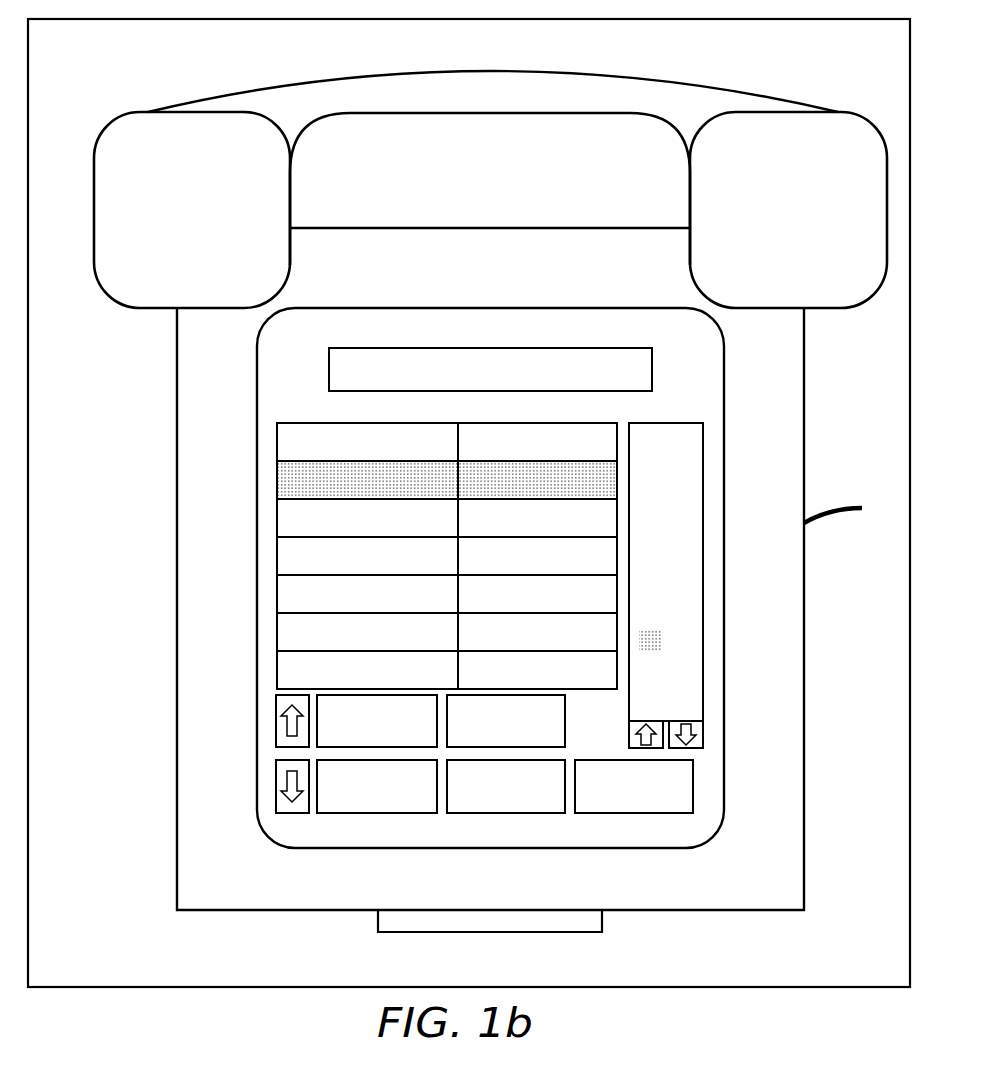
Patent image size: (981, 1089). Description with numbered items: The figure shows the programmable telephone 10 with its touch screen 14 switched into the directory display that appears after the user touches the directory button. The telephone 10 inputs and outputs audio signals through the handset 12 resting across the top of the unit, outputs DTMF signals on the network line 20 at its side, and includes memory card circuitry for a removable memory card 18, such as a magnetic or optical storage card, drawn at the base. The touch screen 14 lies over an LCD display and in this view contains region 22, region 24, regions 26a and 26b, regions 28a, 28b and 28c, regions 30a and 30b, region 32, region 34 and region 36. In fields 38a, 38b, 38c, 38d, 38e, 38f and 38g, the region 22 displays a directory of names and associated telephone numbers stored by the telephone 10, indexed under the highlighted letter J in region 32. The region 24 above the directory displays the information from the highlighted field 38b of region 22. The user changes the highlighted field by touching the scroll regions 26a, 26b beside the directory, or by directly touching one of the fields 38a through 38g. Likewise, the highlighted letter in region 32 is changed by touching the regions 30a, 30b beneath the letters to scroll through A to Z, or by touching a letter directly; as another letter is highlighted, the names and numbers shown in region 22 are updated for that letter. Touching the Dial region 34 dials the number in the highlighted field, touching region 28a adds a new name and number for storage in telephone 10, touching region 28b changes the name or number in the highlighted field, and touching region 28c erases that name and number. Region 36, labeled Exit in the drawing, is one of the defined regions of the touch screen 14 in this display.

The programmable telephone 10 is at (134, 645).
The handset 12 is at (709, 98).
The touch screen 14 is at (631, 849).
The removable memory card 18 is at (582, 932).
The network line 20 is at (832, 516).
The directory region 22 is at (410, 534).
The information display region 24 is at (653, 368).
The scroll region 26a is at (276, 738).
The scroll region 26b is at (276, 802).
The add name region 28a is at (372, 814).
The change name region 28b is at (502, 814).
The erase name region 28c is at (607, 814).
The letter scroll region 30a is at (630, 733).
The letter scroll region 30b is at (704, 735).
The letter index region 32 is at (667, 423).
The dial region 34 is at (340, 703).
The touch screen region 36 is at (541, 703).
The directory field 38a is at (277, 441).
The highlighted directory field 38b is at (277, 481).
The directory field 38c is at (277, 519).
The directory field 38d is at (277, 557).
The directory field 38e is at (277, 592).
The directory field 38f is at (277, 630).
The directory field 38g is at (277, 668).